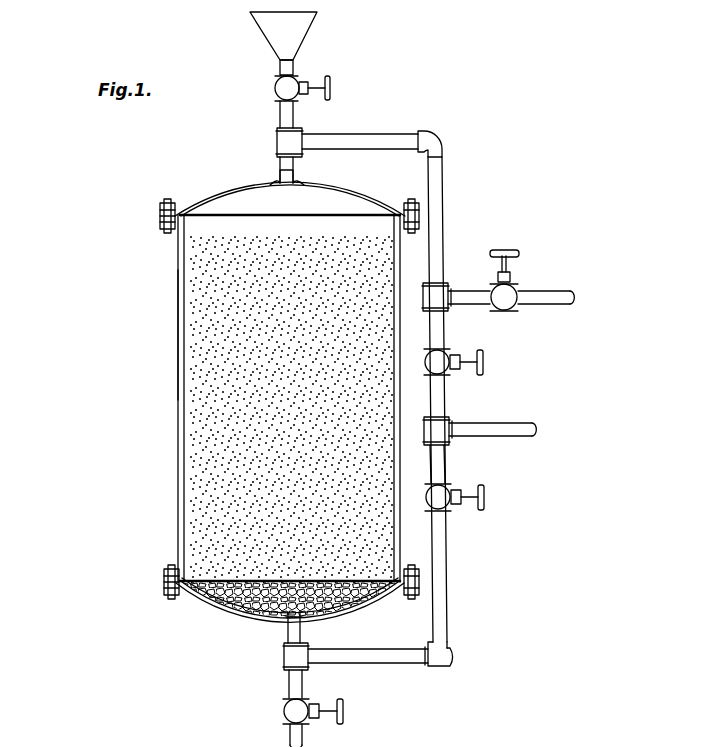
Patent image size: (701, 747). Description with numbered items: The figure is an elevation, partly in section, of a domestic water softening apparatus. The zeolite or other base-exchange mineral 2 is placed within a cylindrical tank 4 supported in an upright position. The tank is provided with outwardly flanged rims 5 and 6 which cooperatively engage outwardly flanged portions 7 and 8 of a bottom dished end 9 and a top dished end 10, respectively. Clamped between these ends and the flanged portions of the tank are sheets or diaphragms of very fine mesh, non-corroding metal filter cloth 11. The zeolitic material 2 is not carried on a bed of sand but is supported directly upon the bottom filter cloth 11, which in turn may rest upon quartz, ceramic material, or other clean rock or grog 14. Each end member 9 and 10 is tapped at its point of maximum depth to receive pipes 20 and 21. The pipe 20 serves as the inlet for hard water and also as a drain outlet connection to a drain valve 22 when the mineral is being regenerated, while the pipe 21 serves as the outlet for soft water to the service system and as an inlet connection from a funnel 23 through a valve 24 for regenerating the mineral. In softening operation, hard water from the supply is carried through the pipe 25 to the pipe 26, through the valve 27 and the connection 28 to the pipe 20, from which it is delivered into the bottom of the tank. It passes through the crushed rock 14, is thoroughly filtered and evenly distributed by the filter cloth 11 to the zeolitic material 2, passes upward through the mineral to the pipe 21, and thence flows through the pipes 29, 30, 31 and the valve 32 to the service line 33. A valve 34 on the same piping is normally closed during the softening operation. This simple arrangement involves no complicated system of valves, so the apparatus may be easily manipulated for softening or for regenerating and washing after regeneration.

The zeolite 2 is at (185, 402).
The tank 4 is at (178, 292).
The outwardly flanged rim 5 is at (165, 580).
The outwardly flanged rim 6 is at (164, 226).
The outwardly flanged portion 7 is at (162, 590).
The outwardly flanged portion 8 is at (158, 212).
The bottom dished end 9 is at (252, 616).
The top dished end 10 is at (226, 191).
The filter cloth 11 is at (342, 212).
The grog 14 is at (224, 610).
The pipe 20 is at (287, 632).
The pipe 21 is at (278, 162).
The drain valve 22 is at (290, 712).
The funnel 23 is at (300, 28).
The valve 24 is at (296, 85).
The pipe 25 is at (516, 428).
The pipe 26 is at (446, 464).
The valve 27 is at (487, 498).
The connection 28 is at (447, 597).
The pipe 29 is at (386, 134).
The pipe 30 is at (440, 223).
The pipe 31 is at (465, 290).
The valve 32 is at (510, 288).
The service line 33 is at (562, 292).
The valve 34 is at (485, 356).